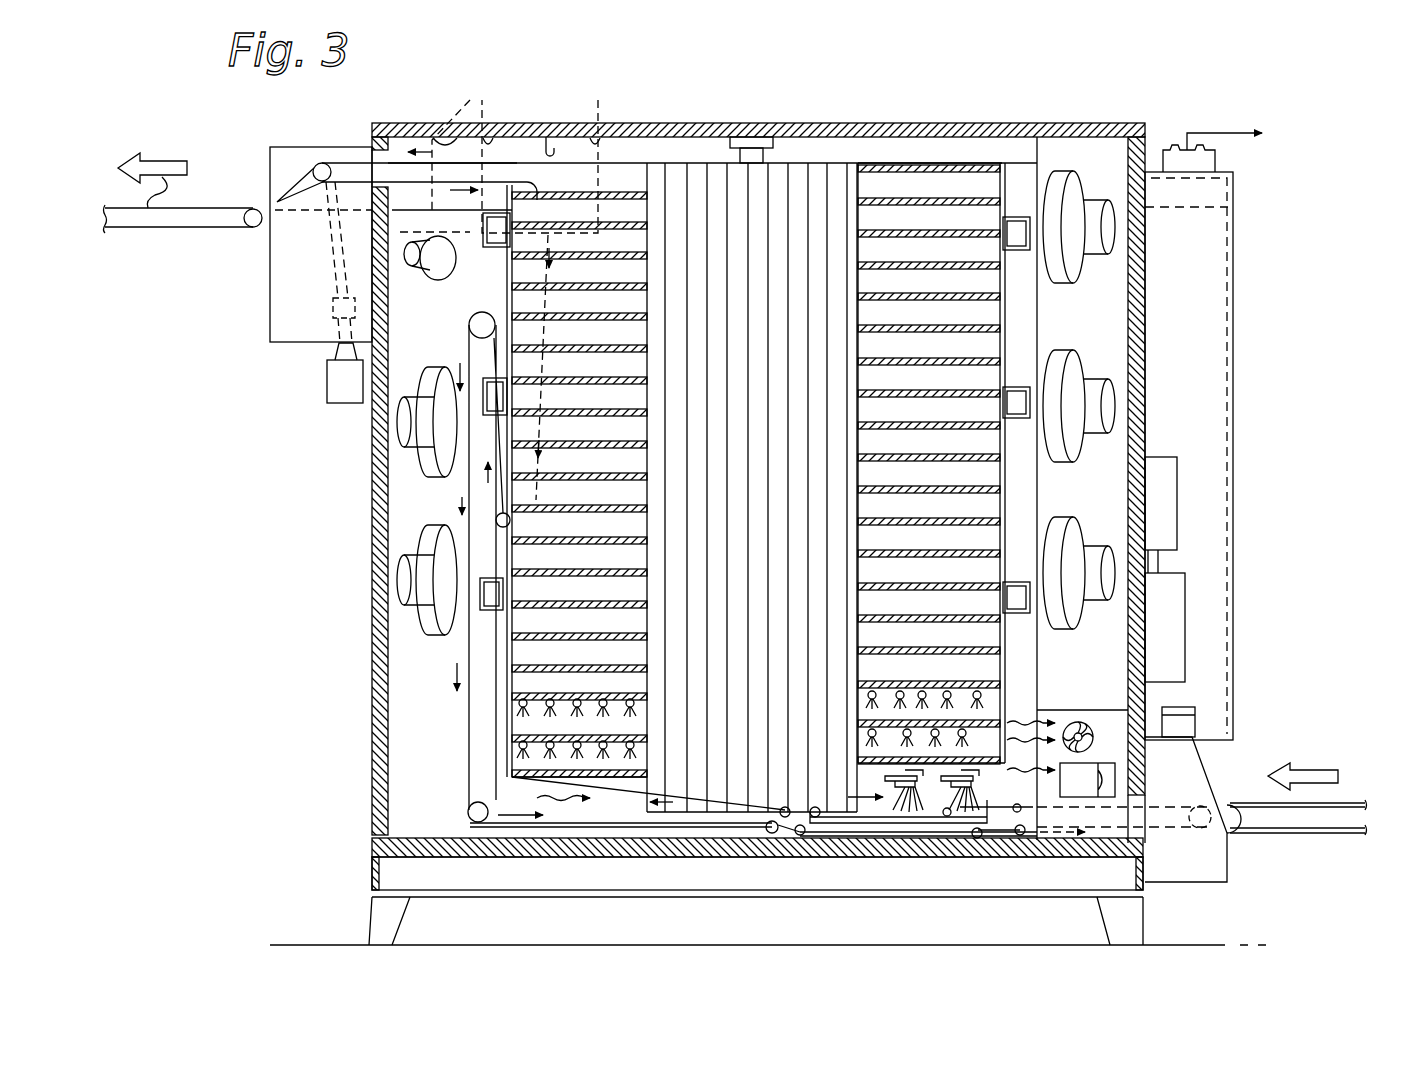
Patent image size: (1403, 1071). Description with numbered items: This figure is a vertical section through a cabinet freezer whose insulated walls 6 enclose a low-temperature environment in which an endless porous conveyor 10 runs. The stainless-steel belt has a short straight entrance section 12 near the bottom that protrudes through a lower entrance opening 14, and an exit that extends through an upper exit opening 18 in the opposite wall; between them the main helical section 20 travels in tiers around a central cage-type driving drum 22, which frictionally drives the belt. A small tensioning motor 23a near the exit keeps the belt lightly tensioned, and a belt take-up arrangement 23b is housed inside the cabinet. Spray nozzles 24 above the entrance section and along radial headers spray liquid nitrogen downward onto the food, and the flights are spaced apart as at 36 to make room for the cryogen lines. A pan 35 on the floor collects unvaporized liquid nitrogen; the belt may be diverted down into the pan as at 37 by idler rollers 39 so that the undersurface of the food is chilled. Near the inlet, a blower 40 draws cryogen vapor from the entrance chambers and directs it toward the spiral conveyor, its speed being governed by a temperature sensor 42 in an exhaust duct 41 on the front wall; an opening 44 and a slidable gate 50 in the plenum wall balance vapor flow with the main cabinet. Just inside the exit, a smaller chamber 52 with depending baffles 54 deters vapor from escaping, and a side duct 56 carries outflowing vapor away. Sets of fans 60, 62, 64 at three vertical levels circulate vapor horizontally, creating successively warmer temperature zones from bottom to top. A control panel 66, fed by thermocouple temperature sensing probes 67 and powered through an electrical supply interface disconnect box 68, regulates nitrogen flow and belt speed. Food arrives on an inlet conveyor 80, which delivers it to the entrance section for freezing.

The vertical insulated walls 6 is at (375, 427).
The endless porous conveyor 10 is at (892, 163).
The straight entrance section 12 is at (1168, 832).
The lower entrance opening 14 is at (1197, 773).
The upper exit opening 18 is at (374, 165).
The main helical section 20 is at (960, 167).
The central cage-type driving drum 22 is at (810, 173).
The tensioning motor 23a is at (350, 368).
The belt take-up arrangement 23b is at (467, 480).
The spray nozzles 24 is at (978, 785).
The pan 35 is at (887, 822).
The vertically spaced flights 36 is at (513, 748).
The belt diversion into pan 37 is at (937, 818).
The idler rollers 39 is at (833, 820).
The blower 40 is at (1090, 723).
The exhaust duct 41 is at (1235, 293).
The temperature sensor 42 is at (1230, 207).
The opening 44 is at (1195, 768).
The slidable gate 50 is at (1105, 797).
The chamber 52 is at (546, 154).
The depending baffles 54 is at (460, 144).
The side duct 56 is at (313, 284).
The fans 60 is at (415, 613).
The fans 62 is at (412, 445).
The fans 64 is at (418, 273).
The control panel 66 is at (1180, 627).
The thermocouple temperature sensing probes 67 is at (547, 137).
The electrical supply interface disconnect box 68 is at (1170, 470).
The inlet conveyor 80 is at (1355, 835).